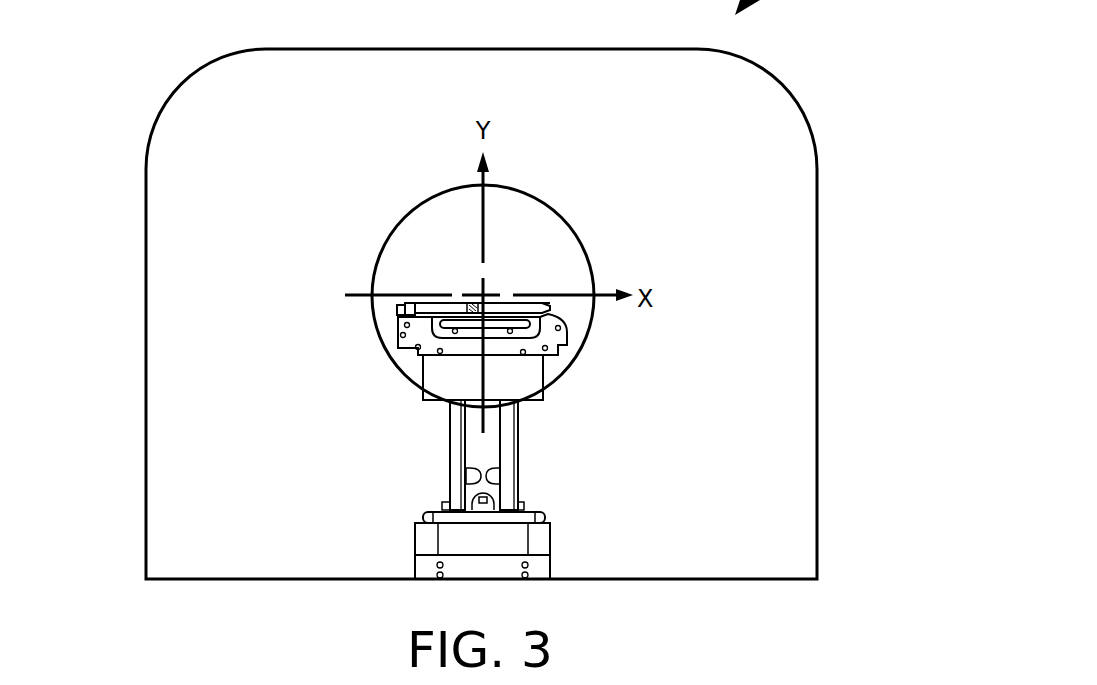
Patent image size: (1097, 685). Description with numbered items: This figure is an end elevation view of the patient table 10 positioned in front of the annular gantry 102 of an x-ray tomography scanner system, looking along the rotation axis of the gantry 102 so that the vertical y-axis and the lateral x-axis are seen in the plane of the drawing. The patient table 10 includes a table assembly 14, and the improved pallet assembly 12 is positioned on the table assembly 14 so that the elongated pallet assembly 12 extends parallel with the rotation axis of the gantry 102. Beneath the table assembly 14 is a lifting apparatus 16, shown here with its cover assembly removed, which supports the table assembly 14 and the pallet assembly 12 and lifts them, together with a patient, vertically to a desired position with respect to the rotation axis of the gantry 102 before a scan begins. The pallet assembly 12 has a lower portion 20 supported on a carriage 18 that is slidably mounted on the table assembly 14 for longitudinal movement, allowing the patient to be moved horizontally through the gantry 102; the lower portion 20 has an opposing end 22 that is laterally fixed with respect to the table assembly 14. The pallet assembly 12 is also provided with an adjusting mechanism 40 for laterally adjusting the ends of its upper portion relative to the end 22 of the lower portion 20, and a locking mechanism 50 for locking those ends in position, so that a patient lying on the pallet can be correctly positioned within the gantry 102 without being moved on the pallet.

The annular gantry 102 is at (133, 174).
The patient table 10 is at (414, 373).
The pallet assembly 12 is at (436, 283).
The table assembly 14 is at (568, 339).
The lifting apparatus 16 is at (519, 480).
The carriage 18 is at (494, 343).
The lower portion 20 is at (548, 308).
The opposing end 22 is at (543, 300).
The adjusting mechanism 40 is at (399, 318).
The locking mechanism 50 is at (490, 305).